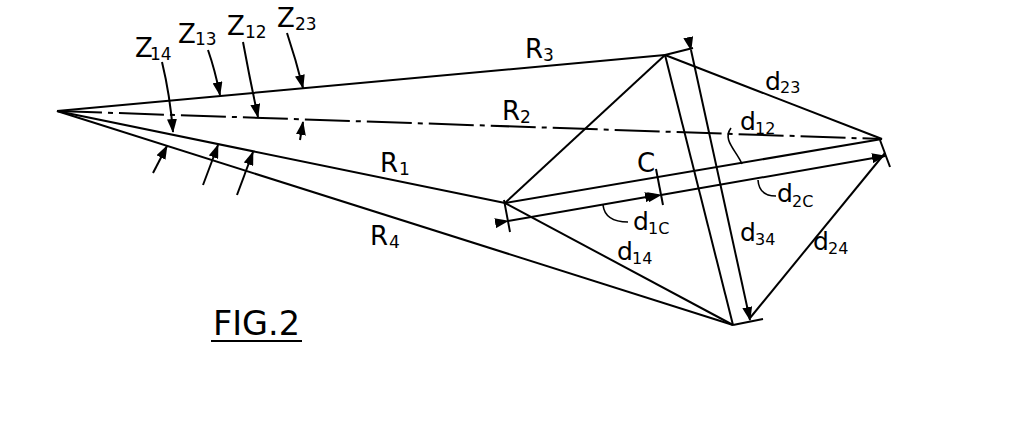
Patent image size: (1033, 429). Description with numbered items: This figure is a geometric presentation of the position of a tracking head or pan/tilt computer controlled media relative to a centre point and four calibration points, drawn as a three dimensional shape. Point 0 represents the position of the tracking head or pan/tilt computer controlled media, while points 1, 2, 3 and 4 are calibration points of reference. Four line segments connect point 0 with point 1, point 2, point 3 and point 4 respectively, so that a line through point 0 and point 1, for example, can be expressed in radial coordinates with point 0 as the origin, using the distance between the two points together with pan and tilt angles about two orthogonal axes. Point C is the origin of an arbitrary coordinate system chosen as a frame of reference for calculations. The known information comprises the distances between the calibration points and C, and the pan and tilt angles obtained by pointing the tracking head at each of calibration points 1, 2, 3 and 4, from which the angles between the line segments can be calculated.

The position of tracking head or pan/tilt computer controlled media 0 is at (456, 190).
The calibration point of reference 1 is at (688, 190).
The calibration point of reference 2 is at (788, 186).
The calibration point of reference 3 is at (695, 173).
The calibration point of reference 4 is at (747, 342).